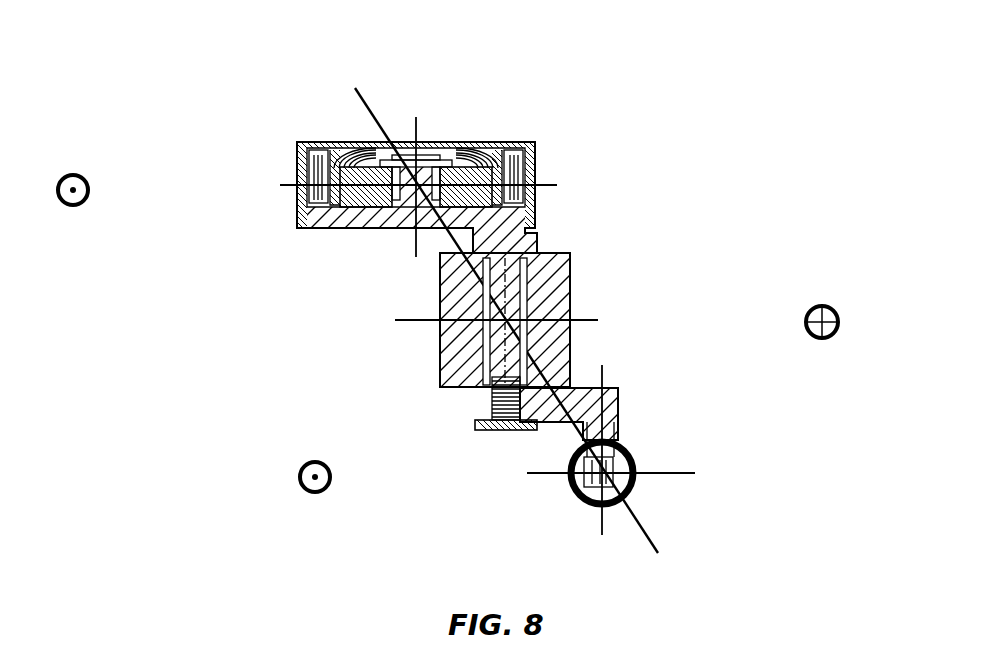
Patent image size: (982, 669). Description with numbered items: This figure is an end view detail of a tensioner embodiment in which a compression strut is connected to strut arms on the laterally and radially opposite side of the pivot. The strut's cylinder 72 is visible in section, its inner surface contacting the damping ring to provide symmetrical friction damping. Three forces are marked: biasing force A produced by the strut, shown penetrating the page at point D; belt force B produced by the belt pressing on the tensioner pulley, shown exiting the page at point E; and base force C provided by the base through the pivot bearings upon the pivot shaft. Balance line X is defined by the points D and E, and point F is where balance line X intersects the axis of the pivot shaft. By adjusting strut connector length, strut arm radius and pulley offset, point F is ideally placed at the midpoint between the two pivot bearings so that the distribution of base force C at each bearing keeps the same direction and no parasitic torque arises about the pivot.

The cylinder 72 is at (573, 495).
The biasing force A is at (464, 484).
The belt force B is at (214, 195).
The base force C is at (670, 333).
The point D is at (628, 453).
The point E is at (417, 185).
The point F is at (533, 307).
The balance line X is at (452, 236).